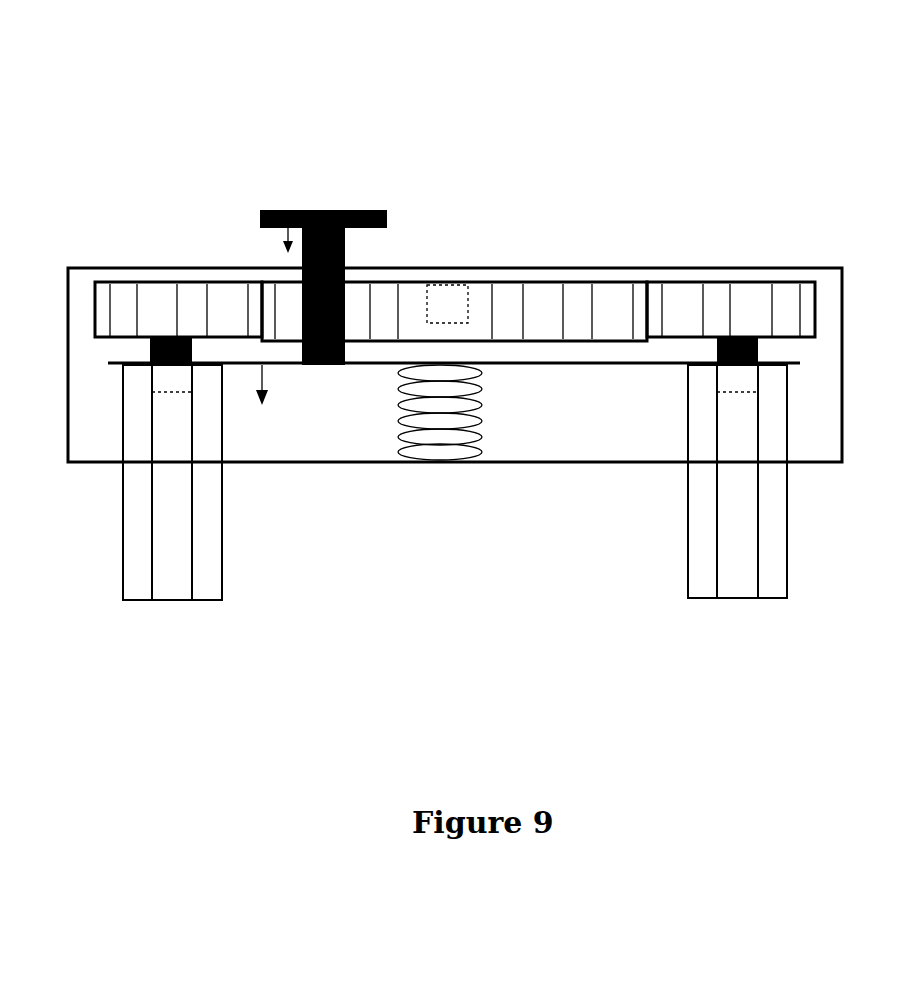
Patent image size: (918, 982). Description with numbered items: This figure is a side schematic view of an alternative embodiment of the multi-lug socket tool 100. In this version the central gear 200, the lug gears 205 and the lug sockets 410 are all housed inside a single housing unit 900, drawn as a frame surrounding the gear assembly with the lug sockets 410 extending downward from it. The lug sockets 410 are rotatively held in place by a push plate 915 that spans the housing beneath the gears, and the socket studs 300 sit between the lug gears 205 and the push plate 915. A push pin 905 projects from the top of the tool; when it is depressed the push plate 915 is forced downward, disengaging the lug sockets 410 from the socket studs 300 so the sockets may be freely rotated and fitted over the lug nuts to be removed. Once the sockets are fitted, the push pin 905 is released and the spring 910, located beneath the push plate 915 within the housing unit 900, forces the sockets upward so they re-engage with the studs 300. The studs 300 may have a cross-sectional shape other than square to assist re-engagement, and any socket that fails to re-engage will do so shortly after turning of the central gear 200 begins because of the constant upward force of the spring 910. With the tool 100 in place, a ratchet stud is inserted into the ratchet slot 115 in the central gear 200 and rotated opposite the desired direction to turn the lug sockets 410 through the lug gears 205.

The multi-lug socket tool 100 is at (454, 88).
The ratchet slot 115 is at (440, 296).
The central gear 200 is at (568, 280).
The lug gears 205 is at (153, 280).
The socket studs 300 is at (148, 352).
The lug sockets 410 is at (222, 557).
The housing unit 900 is at (567, 463).
The push pin 905 is at (327, 211).
The spring 910 is at (402, 422).
The push plate 915 is at (605, 365).